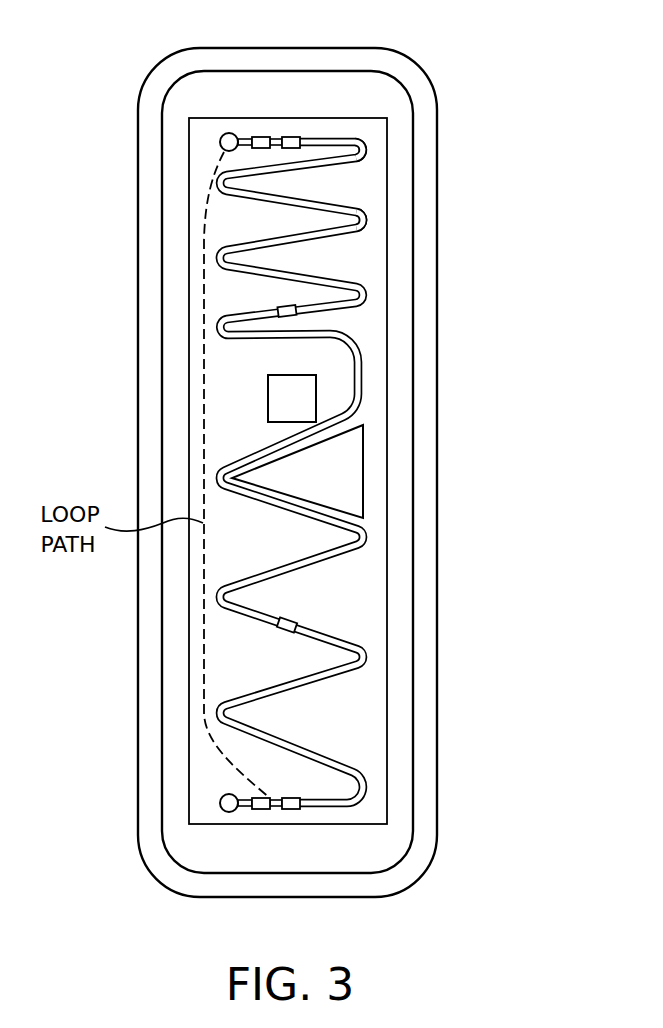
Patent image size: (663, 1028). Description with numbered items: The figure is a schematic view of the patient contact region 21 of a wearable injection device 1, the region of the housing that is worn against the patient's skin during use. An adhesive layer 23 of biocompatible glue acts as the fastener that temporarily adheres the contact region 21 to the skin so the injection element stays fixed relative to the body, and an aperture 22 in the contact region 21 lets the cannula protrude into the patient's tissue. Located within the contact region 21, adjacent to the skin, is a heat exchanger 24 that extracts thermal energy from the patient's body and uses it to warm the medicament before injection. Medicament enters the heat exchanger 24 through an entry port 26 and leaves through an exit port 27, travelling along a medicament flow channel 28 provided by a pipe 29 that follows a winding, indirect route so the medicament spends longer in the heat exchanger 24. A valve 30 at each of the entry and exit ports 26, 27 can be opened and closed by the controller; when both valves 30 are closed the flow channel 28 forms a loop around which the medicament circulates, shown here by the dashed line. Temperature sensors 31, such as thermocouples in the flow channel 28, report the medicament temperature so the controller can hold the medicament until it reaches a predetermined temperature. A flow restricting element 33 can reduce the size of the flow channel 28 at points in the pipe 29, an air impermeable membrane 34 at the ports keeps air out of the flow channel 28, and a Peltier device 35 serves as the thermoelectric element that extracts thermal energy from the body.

The device 1 is at (494, 662).
The contact region 21 is at (518, 173).
The aperture 22 is at (268, 405).
The adhesive layer 23 is at (427, 283).
The heat exchanger 24 is at (362, 118).
The entry port 26 is at (220, 142).
The exit port 27 is at (220, 803).
The medicament flow channel 28 is at (365, 224).
The pipe 29 is at (365, 150).
The valve 30 is at (258, 137).
The temperature sensor 31 is at (290, 137).
The flow restricting element 33 is at (283, 309).
The air impermeable membrane 34 is at (240, 137).
The Peltier device 35 is at (355, 480).